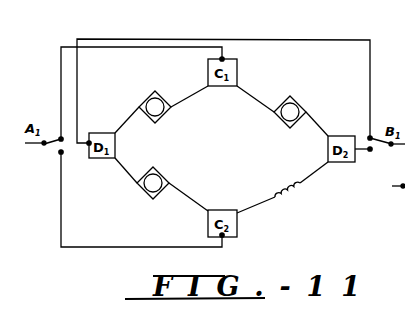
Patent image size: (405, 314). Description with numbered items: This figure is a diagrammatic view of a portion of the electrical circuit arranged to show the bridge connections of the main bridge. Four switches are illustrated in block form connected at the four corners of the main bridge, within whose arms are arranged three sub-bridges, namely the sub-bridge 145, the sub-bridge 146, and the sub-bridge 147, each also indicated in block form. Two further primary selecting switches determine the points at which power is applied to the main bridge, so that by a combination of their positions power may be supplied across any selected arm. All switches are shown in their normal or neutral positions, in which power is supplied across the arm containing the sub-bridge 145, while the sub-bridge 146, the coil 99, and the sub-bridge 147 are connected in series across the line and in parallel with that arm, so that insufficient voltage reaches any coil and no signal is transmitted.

The sub-bridge 145 is at (166, 112).
The sub-bridge 146 is at (302, 103).
The sub-bridge 147 is at (168, 183).
The coil 99 is at (286, 194).